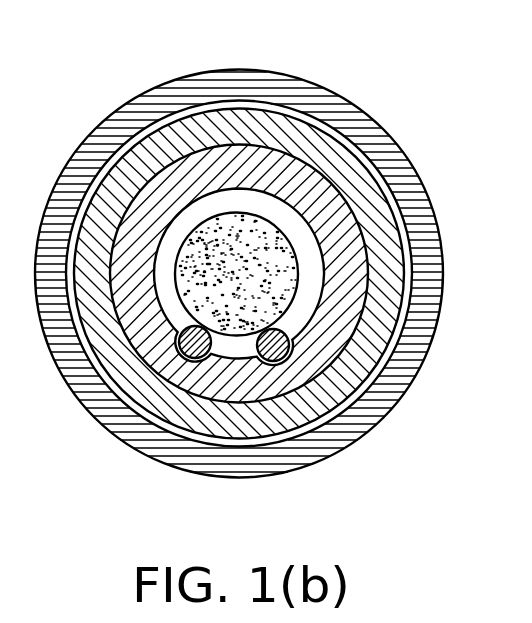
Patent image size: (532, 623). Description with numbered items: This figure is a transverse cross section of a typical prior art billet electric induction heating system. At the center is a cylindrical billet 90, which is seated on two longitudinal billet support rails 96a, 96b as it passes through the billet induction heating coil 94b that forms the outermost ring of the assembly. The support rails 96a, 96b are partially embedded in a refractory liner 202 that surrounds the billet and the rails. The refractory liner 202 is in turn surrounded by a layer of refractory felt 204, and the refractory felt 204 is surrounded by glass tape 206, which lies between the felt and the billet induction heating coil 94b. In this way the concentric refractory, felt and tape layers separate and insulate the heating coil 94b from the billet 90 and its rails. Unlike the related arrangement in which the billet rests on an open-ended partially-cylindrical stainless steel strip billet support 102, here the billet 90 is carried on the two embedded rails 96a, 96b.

The cylindrical billet 90 is at (254, 281).
The billet support rail 96a is at (212, 346).
The billet support rail 96b is at (272, 342).
The refractory liner 202 is at (150, 181).
The refractory felt 204 is at (193, 131).
The glass tape 206 is at (255, 107).
The billet induction heating coil 94b is at (385, 137).
The billet support 102 is at (131, 407).